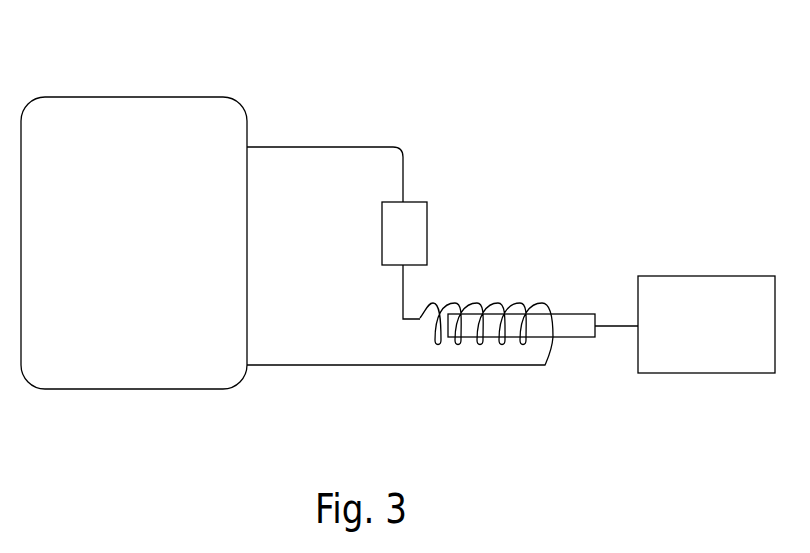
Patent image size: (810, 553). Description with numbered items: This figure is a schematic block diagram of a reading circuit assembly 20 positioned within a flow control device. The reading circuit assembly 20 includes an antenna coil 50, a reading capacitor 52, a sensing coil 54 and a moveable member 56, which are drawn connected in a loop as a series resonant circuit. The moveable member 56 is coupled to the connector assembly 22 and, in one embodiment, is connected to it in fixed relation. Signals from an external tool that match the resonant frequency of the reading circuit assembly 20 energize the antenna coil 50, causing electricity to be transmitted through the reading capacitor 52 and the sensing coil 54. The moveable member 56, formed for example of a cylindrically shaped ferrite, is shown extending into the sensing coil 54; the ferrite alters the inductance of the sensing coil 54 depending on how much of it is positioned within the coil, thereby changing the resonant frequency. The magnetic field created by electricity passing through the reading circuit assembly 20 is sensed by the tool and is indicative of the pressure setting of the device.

The reading circuit assembly 20 is at (58, 46).
The connector assembly 22 is at (706, 324).
The antenna coil 50 is at (100, 97).
The reading capacitor 52 is at (427, 229).
The sensing coil 54 is at (512, 297).
The moveable member 56 is at (586, 314).